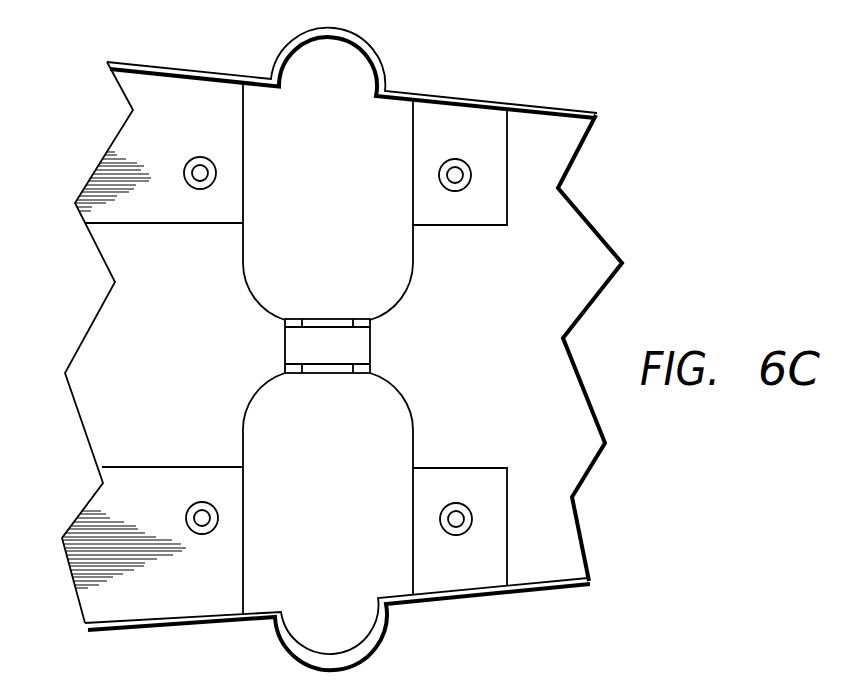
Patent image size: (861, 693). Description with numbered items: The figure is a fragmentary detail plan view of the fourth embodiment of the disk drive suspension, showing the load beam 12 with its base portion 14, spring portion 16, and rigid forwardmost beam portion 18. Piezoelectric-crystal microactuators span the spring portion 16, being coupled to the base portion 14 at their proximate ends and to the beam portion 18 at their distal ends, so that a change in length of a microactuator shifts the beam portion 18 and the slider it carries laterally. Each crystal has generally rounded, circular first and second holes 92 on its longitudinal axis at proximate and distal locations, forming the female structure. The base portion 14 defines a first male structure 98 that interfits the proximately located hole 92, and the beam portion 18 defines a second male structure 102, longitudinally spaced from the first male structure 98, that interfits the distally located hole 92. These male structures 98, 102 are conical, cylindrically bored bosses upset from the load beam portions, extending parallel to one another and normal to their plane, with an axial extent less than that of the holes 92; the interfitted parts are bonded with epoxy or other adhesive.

The load beam 12 is at (490, 101).
The base portion 14 is at (95, 348).
The spring portion 16 is at (378, 378).
The beam portion 18 is at (570, 270).
The holes 92 is at (200, 157).
The first male structure 98 is at (468, 526).
The second male structure 102 is at (188, 506).